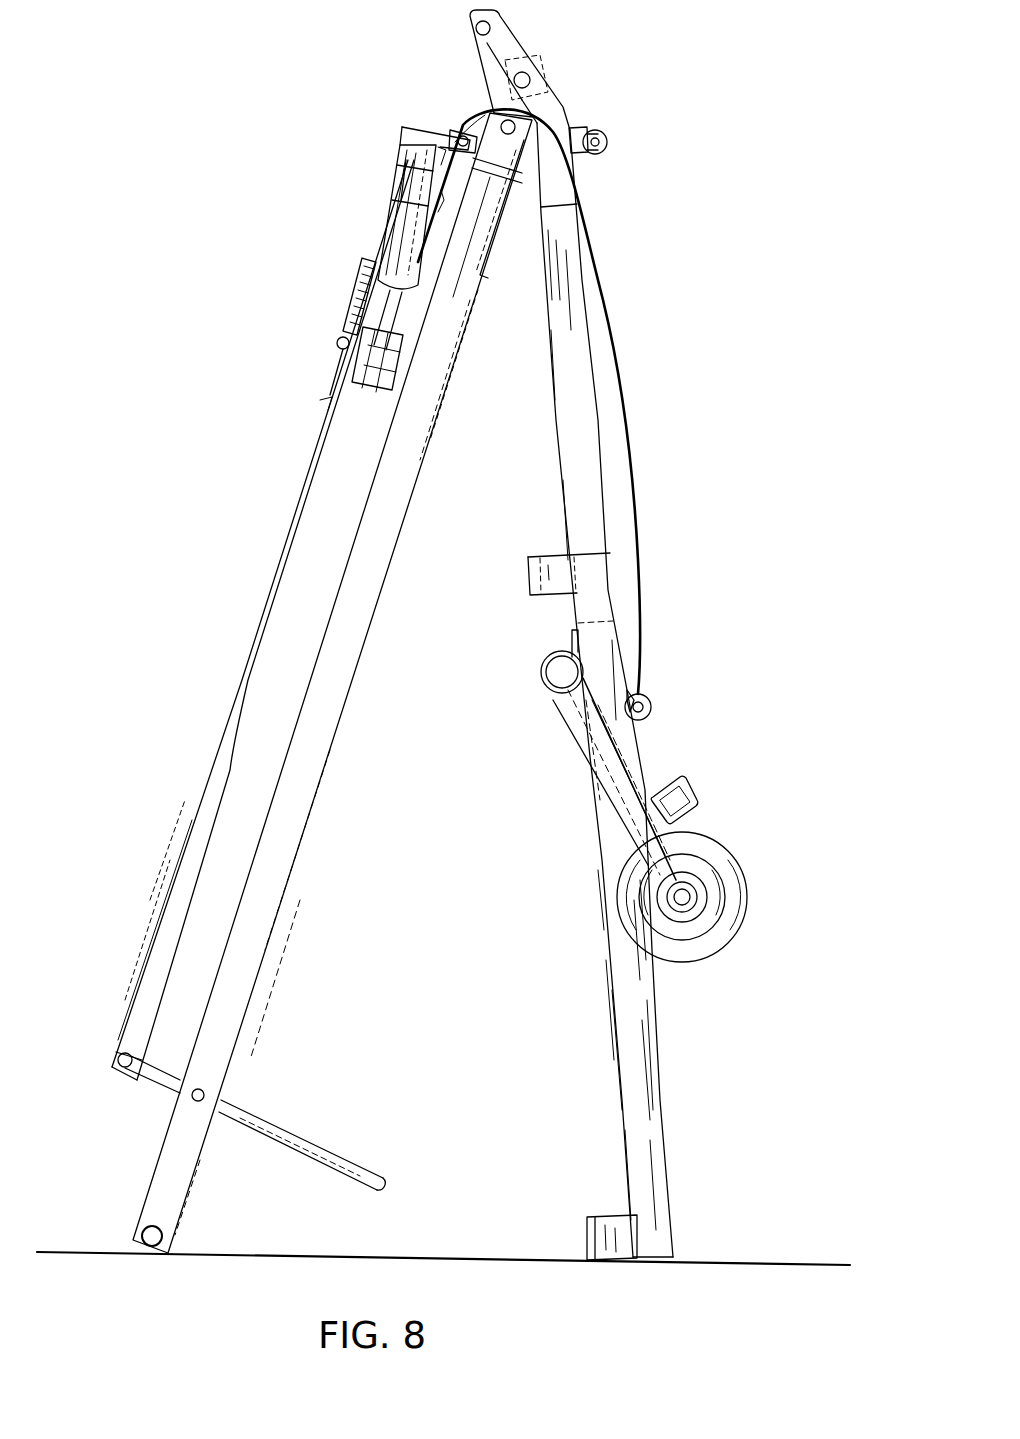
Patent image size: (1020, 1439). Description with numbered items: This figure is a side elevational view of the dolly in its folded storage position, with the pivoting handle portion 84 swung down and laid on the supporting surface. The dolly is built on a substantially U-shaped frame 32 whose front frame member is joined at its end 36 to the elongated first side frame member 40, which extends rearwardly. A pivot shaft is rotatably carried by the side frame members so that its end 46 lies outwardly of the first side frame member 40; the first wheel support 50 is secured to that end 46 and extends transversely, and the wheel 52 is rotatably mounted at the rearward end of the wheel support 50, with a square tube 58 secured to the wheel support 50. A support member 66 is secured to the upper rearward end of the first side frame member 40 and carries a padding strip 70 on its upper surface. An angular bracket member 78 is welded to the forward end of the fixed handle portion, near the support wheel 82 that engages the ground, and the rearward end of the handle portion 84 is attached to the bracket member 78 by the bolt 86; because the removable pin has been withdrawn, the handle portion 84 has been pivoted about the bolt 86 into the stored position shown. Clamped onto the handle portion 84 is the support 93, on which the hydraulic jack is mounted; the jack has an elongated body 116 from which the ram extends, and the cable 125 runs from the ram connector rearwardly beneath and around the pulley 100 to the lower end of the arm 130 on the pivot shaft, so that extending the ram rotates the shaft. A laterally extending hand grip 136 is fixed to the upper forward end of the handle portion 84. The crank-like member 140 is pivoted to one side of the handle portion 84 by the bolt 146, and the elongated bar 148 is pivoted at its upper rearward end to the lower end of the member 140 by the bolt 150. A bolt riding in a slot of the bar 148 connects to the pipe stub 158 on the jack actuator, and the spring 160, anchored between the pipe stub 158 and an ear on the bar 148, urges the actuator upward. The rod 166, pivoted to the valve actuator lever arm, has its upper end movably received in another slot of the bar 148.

The frame 32 is at (527, 575).
The end 36 is at (557, 578).
The first side frame member 40 is at (610, 1003).
The end 46 is at (543, 657).
The first wheel support 50 is at (615, 790).
The wheel 52 is at (743, 875).
The square tube 58 is at (687, 778).
The support member 66 is at (615, 1237).
The padding strip 70 is at (587, 1248).
The angular bracket member 78 is at (556, 189).
The support wheel 82 is at (608, 140).
The handle portion 84 is at (278, 907).
The bolt 86 is at (540, 70).
The support 93 is at (497, 256).
The pulley 100 is at (478, 112).
The body 116 is at (418, 227).
The cable 125 is at (626, 400).
The arm 130 is at (628, 693).
The hand grip 136 is at (142, 1226).
The crank-like member 140 is at (287, 1137).
The bolt 146 is at (208, 1087).
The bar 148 is at (178, 900).
The bolt 150 is at (112, 1077).
The pipe stub 158 is at (382, 237).
The spring 160 is at (352, 290).
The rod 166 is at (347, 352).